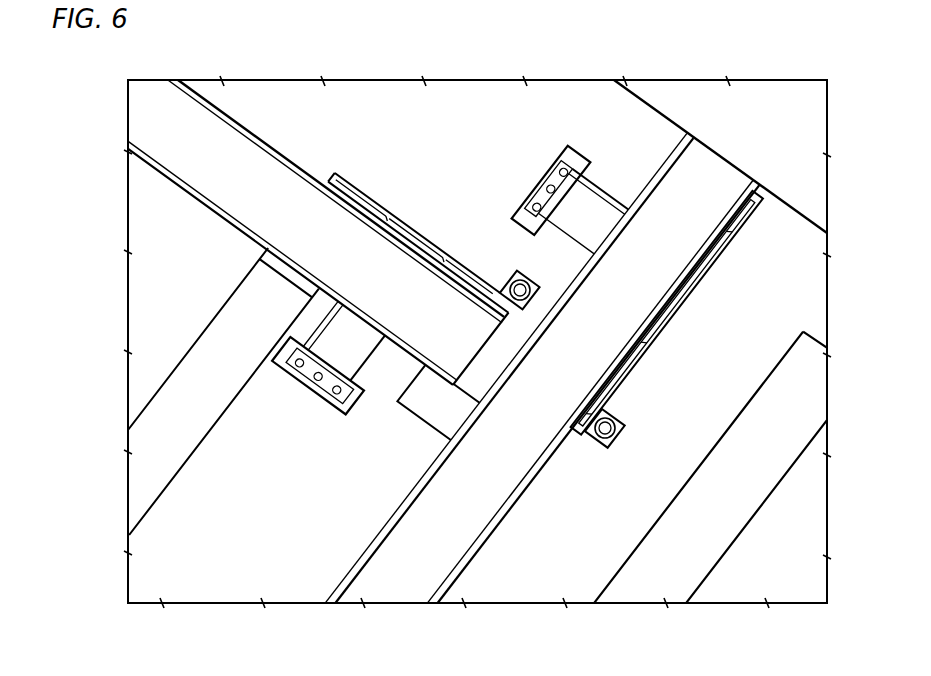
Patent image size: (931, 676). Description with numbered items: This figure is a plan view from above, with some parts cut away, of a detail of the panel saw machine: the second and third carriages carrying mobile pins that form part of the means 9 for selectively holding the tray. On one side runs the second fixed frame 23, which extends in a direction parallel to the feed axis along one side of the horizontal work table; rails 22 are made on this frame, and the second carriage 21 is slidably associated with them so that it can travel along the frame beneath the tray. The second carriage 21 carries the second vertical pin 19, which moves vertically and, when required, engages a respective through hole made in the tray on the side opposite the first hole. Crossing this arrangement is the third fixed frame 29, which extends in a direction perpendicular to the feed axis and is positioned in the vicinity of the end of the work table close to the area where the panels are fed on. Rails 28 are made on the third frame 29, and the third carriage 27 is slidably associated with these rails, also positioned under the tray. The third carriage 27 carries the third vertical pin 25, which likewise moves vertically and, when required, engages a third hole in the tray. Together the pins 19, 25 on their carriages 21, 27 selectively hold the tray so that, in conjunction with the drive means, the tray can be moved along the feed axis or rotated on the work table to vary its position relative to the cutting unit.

The means for selectively holding the tray 9 is at (393, 208).
The second vertical pin 19 is at (513, 287).
The second carriage 21 is at (353, 187).
The rails 22 is at (272, 146).
The second fixed frame 23 is at (258, 189).
The third vertical pin 25 is at (604, 430).
The third carriage 27 is at (715, 255).
The rails 28 is at (513, 493).
The third fixed frame 29 is at (446, 538).